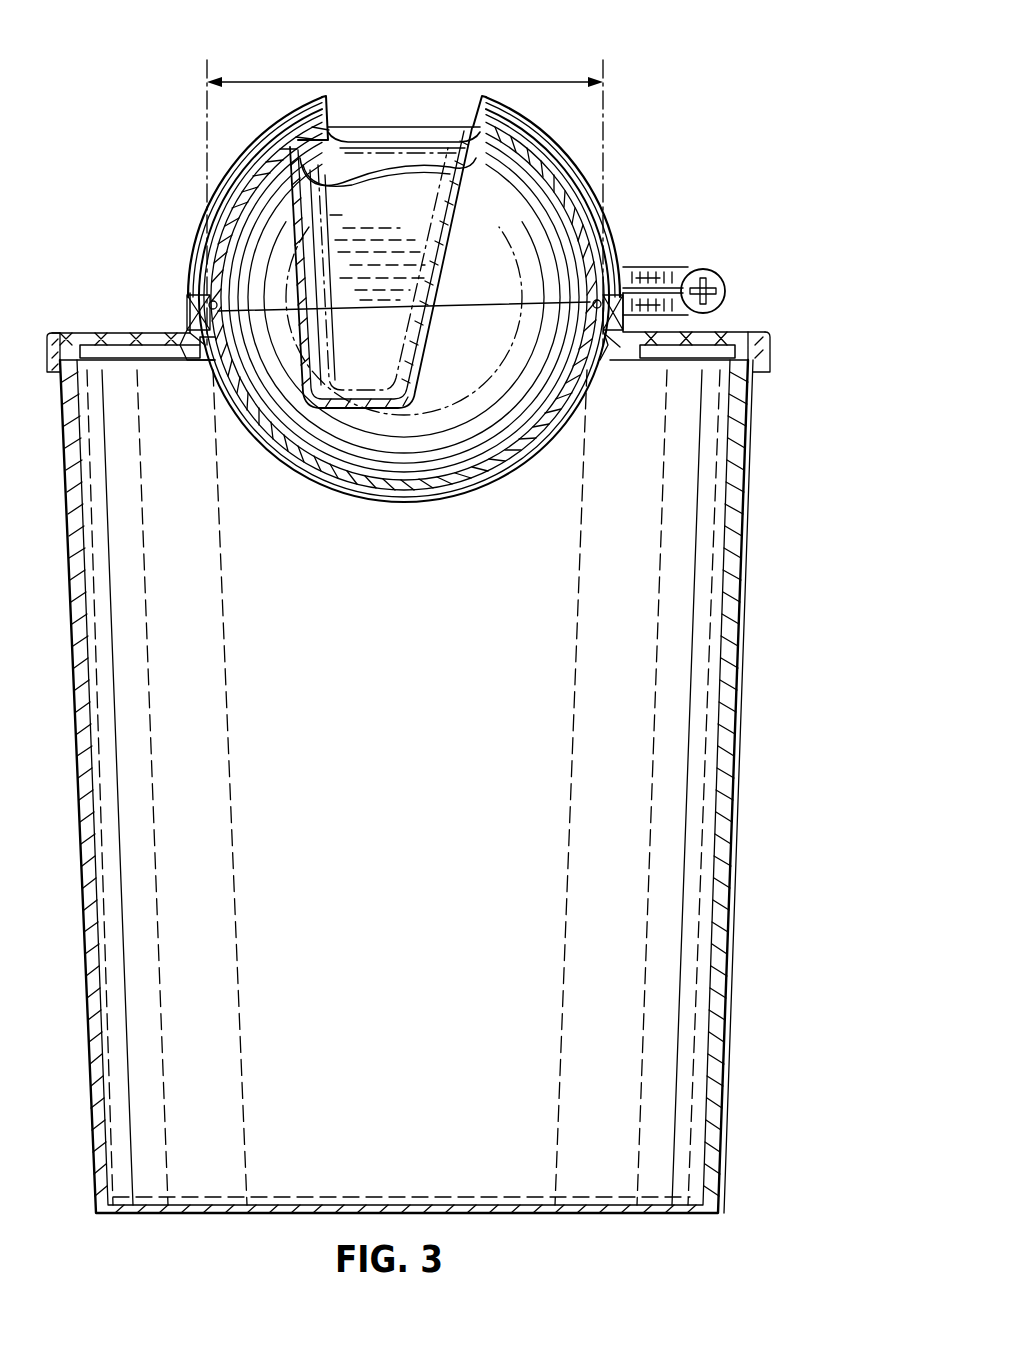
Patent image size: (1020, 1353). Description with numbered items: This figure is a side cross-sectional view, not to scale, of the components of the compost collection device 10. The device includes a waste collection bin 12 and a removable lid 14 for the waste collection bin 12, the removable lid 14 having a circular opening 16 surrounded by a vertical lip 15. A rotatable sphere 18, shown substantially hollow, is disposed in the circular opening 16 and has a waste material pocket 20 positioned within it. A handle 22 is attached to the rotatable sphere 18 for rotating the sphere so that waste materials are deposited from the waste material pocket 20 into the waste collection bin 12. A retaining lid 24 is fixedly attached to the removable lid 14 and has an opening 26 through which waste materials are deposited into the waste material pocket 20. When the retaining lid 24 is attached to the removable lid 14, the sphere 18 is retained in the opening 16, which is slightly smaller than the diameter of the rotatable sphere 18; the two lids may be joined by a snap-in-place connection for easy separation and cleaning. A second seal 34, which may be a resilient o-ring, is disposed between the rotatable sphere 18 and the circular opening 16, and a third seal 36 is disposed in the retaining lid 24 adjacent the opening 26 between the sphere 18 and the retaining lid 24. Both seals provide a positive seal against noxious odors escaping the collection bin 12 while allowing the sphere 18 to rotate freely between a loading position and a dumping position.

The compost collection device 10 is at (726, 190).
The waste collection bin 12 is at (690, 898).
The removable lid 14 is at (141, 337).
The vertical lip 15 is at (195, 318).
The circular opening 16 is at (212, 384).
The rotatable sphere 18 is at (560, 203).
The waste material pocket 20 is at (298, 232).
The handle 22 is at (727, 291).
The retaining lid 24 is at (572, 160).
The opening 26 is at (406, 98).
The second seal 34 is at (592, 358).
The third seal 36 is at (427, 163).